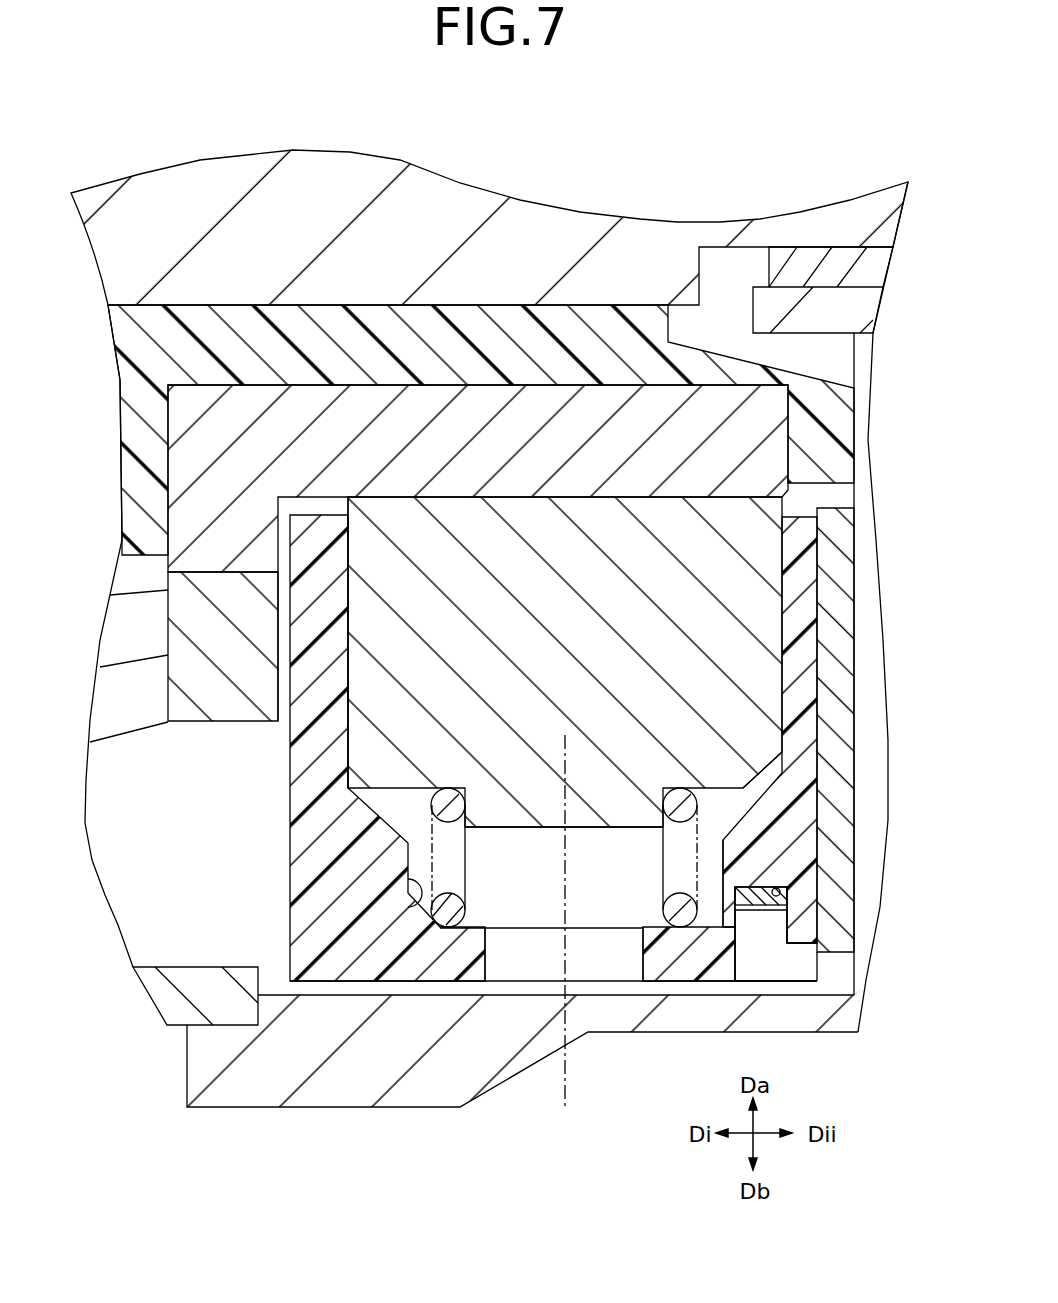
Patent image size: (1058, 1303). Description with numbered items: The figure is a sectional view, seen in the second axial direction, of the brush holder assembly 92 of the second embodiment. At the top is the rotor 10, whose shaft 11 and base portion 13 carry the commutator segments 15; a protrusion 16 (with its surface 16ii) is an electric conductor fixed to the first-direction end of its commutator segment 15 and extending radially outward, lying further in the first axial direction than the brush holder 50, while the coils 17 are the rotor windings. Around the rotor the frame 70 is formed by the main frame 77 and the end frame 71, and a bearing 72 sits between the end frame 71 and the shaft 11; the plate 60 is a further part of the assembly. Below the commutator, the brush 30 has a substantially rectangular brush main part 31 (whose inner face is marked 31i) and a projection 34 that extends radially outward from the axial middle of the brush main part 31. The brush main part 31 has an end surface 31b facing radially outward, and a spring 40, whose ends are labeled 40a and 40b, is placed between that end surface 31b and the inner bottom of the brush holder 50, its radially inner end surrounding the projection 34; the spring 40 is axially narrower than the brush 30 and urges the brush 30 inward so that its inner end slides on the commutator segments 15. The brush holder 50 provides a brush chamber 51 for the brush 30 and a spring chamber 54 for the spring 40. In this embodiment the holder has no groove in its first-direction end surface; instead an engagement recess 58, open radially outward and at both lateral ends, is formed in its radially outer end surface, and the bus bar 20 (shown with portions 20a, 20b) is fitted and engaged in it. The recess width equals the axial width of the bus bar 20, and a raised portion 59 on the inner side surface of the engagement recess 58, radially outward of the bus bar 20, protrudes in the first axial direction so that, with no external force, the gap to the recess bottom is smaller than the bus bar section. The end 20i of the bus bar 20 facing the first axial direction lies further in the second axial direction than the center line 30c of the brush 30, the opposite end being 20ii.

The rotor 10 is at (170, 192).
The shaft 11 is at (868, 217).
The base portion 13 is at (808, 385).
The commutator segments 15 is at (752, 433).
The protrusions 16 is at (240, 706).
The outer face of retaining portion 16ii is at (276, 597).
The coils 17 is at (123, 622).
The bus bar 20 is at (830, 891).
The upper plate portion 20a is at (757, 887).
The lower plate portion 20b is at (758, 912).
The end of the bus bar 20i is at (727, 865).
The outer face of plate 20ii is at (790, 893).
The brush 30 is at (712, 637).
The center line 30c is at (564, 937).
The brush main part 31 is at (760, 548).
The inner surface of sleeve 31i is at (340, 612).
The end surface 31b is at (738, 790).
The projection 34 is at (612, 795).
The spring 40 is at (556, 854).
The upper elastic ring 40a is at (448, 788).
The lower elastic ring 40b is at (445, 928).
The brush holder 50 is at (578, 748).
The brush chamber 51 is at (350, 735).
The spring chamber 54 is at (422, 915).
The engagement recess 58 is at (776, 893).
The raised portion 59 is at (777, 944).
The plate 60 is at (850, 772).
The frame 70 is at (454, 1071).
The end frame 71 is at (197, 1059).
The bearing 72 is at (870, 272).
The main frame 77 is at (165, 995).
The brush holder assembly 92 is at (836, 149).